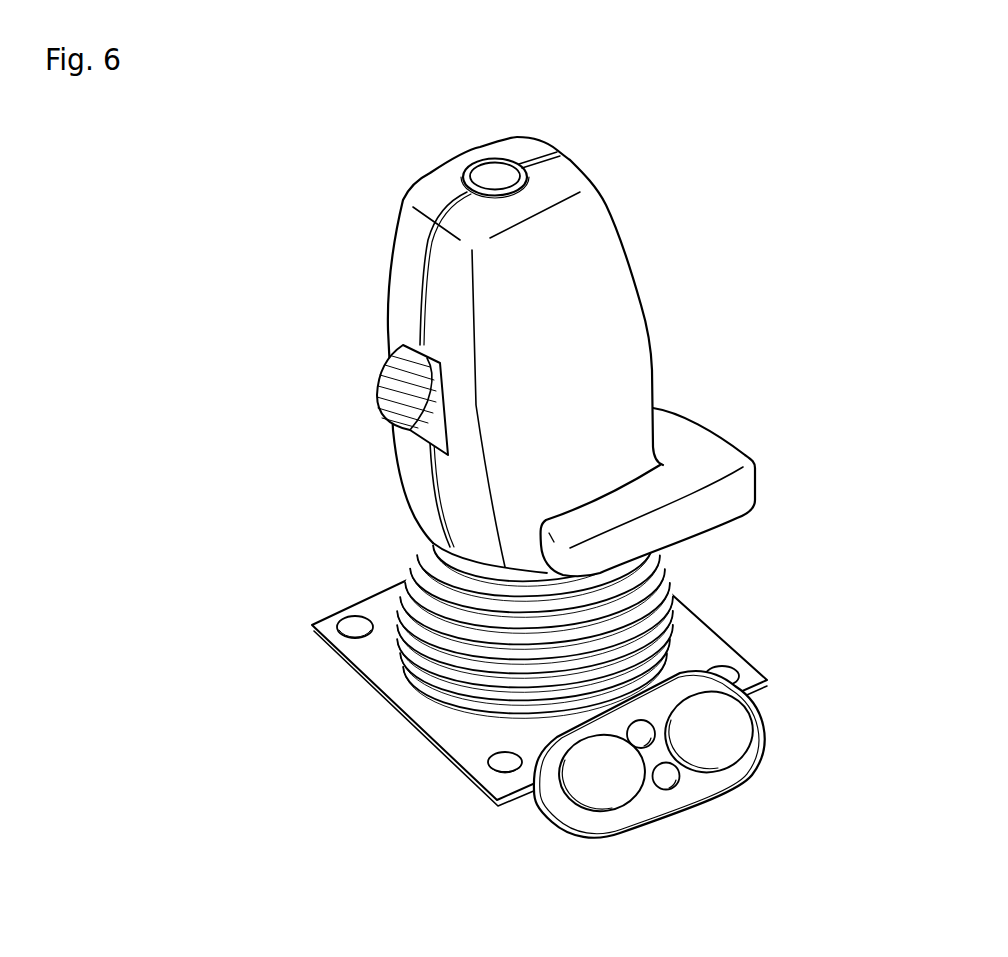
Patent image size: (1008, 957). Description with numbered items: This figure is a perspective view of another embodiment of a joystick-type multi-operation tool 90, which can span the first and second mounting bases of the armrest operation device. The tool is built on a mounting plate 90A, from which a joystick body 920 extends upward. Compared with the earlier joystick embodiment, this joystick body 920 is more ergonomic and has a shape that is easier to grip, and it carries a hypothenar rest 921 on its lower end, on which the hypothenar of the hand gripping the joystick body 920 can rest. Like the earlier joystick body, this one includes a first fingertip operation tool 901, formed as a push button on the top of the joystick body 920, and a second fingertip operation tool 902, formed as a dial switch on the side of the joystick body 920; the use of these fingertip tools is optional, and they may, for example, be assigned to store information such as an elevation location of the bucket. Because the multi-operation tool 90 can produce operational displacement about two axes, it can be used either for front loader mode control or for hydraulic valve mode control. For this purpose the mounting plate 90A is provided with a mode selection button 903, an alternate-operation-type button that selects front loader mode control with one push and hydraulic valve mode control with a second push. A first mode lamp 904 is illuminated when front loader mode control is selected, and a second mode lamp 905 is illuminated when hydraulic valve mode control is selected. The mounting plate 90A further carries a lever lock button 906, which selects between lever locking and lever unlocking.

The multi-operation tool 90 is at (325, 160).
The mounting plate 90A is at (380, 652).
The first fingertip operation tool 901 is at (497, 170).
The second fingertip operation tool 902 is at (387, 388).
The mode selection button 903 is at (727, 735).
The first mode lamp 904 is at (652, 728).
The second mode lamp 905 is at (673, 773).
The lever lock button 906 is at (610, 787).
The joystick body 920 is at (637, 297).
The hypothenar rest 921 is at (722, 453).